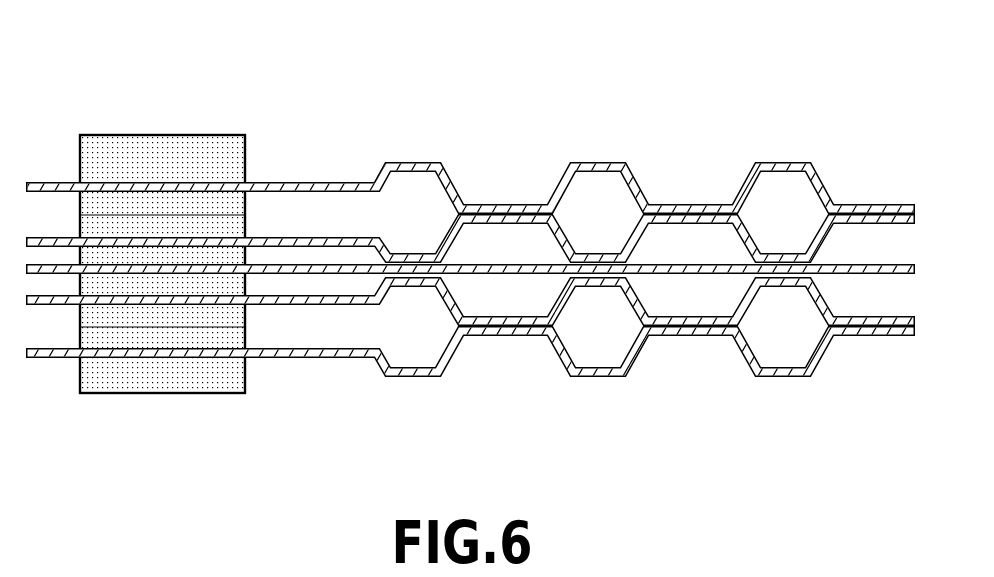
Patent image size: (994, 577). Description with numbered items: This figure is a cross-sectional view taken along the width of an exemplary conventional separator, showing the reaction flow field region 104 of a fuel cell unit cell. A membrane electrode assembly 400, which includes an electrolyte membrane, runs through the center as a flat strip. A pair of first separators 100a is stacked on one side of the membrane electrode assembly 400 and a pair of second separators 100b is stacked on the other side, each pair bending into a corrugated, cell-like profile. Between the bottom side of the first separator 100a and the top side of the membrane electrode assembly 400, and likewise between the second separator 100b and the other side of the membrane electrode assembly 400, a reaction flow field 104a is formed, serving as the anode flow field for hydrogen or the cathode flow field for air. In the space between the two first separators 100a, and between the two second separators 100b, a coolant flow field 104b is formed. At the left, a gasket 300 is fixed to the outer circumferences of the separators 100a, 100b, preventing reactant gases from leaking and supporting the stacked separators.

The gasket 300 is at (158, 150).
The reaction flow field region 104 is at (470, 262).
The reaction flow field 104a is at (670, 313).
The coolant flow field 104b is at (593, 195).
The first separator 100a is at (640, 200).
The second separator 100b is at (688, 222).
The membrane electrode assembly 400 is at (500, 268).